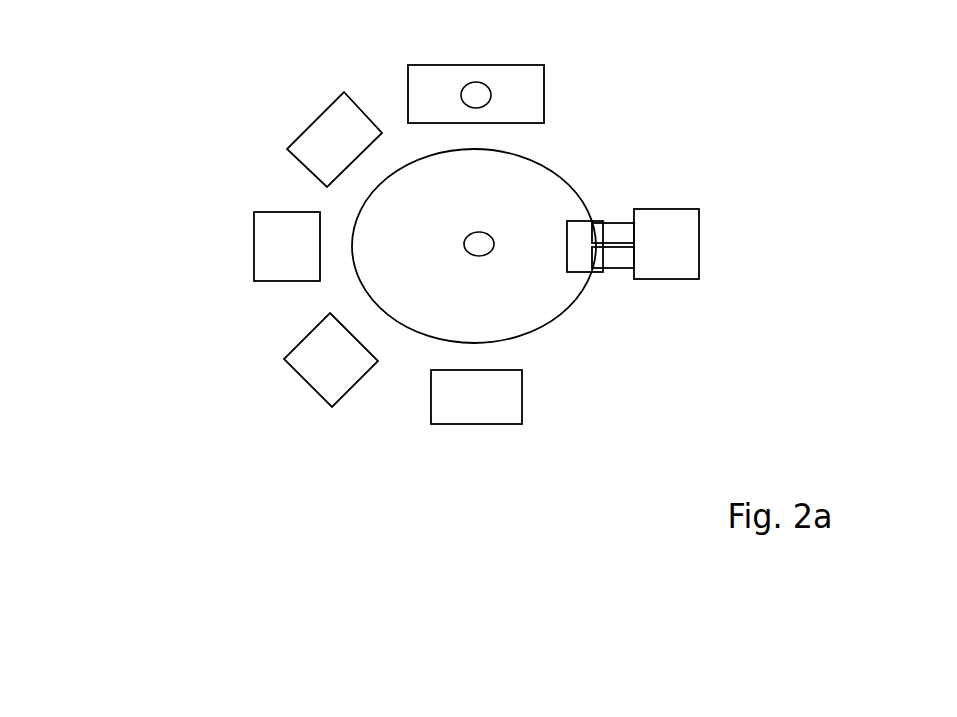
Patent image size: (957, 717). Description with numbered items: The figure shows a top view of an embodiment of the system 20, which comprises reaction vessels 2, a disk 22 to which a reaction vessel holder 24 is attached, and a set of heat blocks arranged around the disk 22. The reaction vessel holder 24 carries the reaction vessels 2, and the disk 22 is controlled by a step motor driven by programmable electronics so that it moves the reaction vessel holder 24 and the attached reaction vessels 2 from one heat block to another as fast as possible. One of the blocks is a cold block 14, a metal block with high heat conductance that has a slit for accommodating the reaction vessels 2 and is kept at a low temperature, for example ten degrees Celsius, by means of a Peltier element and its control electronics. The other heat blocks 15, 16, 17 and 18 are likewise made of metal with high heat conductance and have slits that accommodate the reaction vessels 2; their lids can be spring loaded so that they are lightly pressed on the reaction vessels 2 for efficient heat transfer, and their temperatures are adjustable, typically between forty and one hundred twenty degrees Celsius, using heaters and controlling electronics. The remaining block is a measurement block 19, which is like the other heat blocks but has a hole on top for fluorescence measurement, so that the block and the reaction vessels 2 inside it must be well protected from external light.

The disk 22 is at (560, 138).
The system 20 is at (170, 436).
The measurement block 19 is at (432, 82).
The heat block 18 is at (332, 133).
The heat block 17 is at (273, 257).
The heat block 16 is at (332, 378).
The heat block 15 is at (465, 406).
The reaction vessel holder 24 is at (582, 243).
The reaction vessel 2 is at (613, 232).
The cold block 14 is at (688, 230).